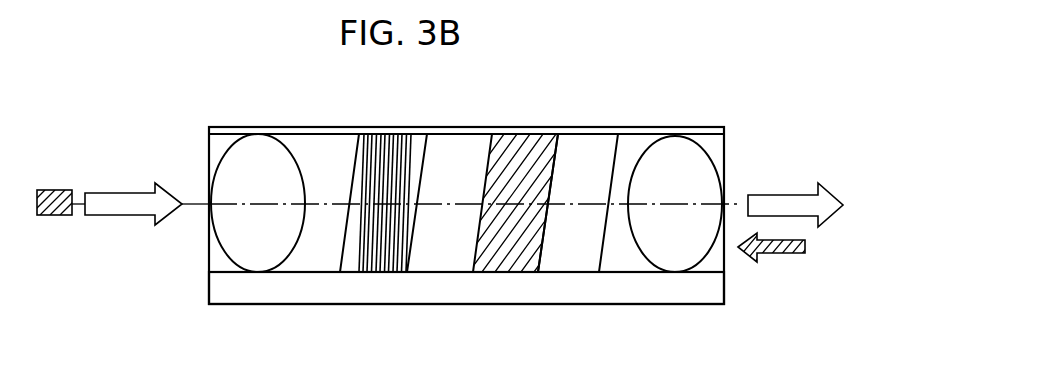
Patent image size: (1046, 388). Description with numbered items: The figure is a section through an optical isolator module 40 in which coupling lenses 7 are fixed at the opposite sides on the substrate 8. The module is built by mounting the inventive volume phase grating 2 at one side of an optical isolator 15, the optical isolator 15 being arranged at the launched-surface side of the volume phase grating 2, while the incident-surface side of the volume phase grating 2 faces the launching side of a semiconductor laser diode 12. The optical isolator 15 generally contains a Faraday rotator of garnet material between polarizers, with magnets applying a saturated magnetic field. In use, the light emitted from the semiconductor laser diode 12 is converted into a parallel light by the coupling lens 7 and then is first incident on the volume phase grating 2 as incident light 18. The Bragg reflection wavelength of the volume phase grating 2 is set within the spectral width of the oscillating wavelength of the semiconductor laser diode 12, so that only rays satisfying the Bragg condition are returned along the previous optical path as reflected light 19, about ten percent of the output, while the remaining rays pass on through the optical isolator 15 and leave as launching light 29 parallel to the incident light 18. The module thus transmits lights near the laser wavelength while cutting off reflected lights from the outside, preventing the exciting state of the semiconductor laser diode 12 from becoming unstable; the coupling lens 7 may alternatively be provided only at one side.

The optical isolator module 40 is at (571, 122).
The substrate 8 is at (225, 283).
The coupling lens 7 is at (247, 158).
The volume phase grating 2 is at (392, 160).
The optical isolator 15 is at (578, 313).
The semiconductor laser diode 12 is at (53, 188).
The incident light 18 is at (112, 190).
The launching light 29 is at (772, 193).
The reflected light 19 is at (783, 255).